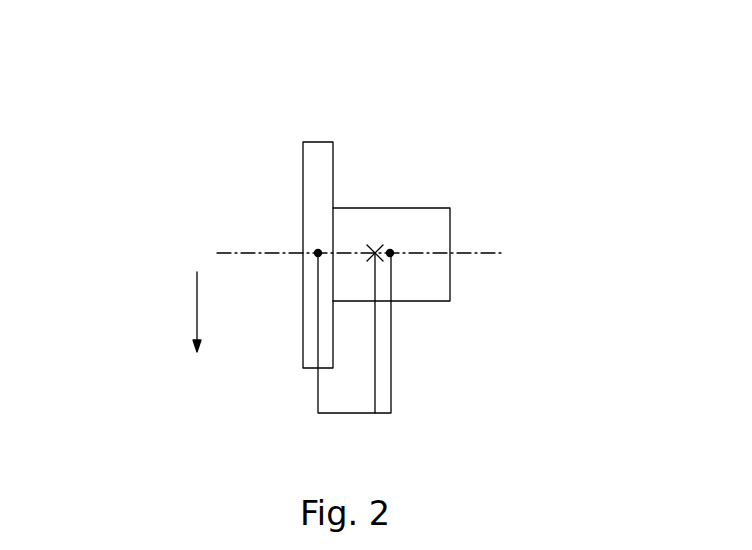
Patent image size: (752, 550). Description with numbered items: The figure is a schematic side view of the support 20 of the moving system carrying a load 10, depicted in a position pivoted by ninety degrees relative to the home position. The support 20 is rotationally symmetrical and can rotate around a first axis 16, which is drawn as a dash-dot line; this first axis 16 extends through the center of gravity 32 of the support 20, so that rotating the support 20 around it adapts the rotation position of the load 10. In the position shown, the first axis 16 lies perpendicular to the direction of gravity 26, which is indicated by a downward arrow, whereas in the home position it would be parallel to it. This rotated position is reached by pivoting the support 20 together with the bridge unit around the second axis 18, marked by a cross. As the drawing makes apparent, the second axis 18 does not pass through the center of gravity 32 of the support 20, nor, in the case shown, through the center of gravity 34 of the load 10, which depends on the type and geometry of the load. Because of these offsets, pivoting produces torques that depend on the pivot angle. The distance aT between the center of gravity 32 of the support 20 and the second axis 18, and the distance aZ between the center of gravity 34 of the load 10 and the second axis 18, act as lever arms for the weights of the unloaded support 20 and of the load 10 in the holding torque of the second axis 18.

The load 10 is at (436, 215).
The first axis 16 is at (496, 250).
The second axis 18 is at (373, 251).
The support 20 is at (317, 167).
The direction of gravity 26 is at (197, 291).
The center of gravity of the support 32 is at (318, 253).
The center of gravity of the load 34 is at (390, 250).
The distance between the center of gravity of the support and the second axis aT is at (335, 413).
The distance between the center of gravity of the load and the second axis aZ is at (383, 413).